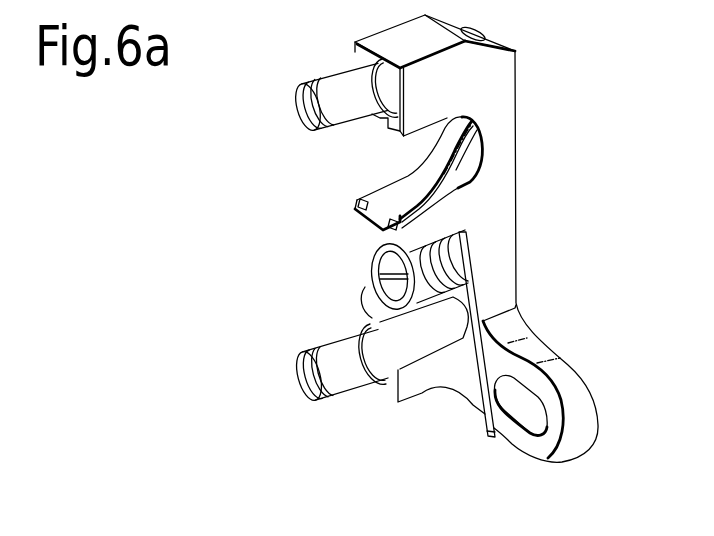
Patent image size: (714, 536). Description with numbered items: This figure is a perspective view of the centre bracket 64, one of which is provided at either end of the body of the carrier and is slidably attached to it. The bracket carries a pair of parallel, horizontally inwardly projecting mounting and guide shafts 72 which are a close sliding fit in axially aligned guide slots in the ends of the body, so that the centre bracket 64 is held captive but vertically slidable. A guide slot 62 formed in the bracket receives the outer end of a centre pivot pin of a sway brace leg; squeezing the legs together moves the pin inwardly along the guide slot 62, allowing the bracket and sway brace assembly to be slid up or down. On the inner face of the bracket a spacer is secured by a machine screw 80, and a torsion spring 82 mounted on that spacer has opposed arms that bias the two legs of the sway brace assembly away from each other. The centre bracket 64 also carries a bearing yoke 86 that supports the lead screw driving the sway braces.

The guide slot 62 is at (538, 418).
The centre bracket 64 is at (540, 243).
The mounting and guide shaft 72 is at (308, 107).
The machine screw 80 is at (388, 276).
The torsion spring 82 is at (490, 416).
The bearing yoke 86 is at (488, 163).